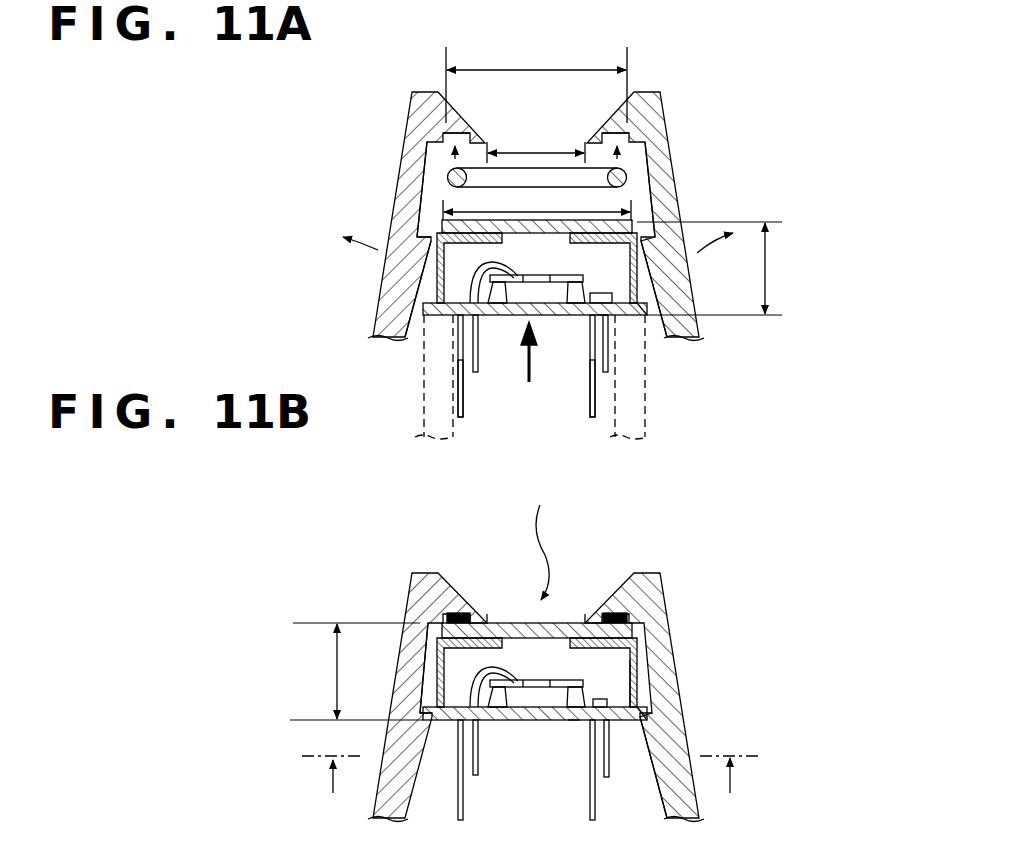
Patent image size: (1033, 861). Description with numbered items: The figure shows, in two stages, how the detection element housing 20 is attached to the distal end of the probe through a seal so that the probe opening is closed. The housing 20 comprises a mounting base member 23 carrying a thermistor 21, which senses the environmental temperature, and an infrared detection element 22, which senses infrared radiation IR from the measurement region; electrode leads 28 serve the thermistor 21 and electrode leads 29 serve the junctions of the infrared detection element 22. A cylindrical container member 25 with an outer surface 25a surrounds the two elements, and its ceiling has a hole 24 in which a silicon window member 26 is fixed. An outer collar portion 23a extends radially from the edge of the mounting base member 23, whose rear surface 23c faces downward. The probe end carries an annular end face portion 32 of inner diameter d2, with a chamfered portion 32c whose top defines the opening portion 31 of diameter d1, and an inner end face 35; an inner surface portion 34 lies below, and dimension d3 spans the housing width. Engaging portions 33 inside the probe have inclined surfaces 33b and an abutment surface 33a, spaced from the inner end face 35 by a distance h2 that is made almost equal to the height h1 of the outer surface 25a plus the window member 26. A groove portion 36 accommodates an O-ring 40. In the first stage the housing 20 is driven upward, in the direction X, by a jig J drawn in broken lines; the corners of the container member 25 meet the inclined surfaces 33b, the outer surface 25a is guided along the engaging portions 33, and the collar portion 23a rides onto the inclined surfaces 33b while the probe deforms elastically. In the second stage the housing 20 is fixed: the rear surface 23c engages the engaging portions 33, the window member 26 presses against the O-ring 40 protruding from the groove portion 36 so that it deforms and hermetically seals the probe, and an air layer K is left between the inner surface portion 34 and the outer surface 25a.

In FIG. 11A, the detection element housing 20 is at (424, 306).
In FIG. 11B, the detection element housing 20 is at (650, 673).
In FIG. 11A, the thermistor 21 is at (601, 293).
In FIG. 11B, the thermistor 21 is at (600, 703).
In FIG. 11A, the infrared detection element 22 is at (545, 282).
In FIG. 11B, the infrared detection element 22 is at (527, 687).
In FIG. 11A, the mounting base member 23 is at (512, 316).
In FIG. 11B, the mounting base member 23 is at (530, 721).
In FIG. 11A, the outer collar portion 23a is at (639, 316).
In FIG. 11B, the outer collar portion 23a is at (646, 718).
In FIG. 11A, the rear surface 23c is at (601, 320).
In FIG. 11B, the rear surface 23c is at (573, 721).
In FIG. 11A, the hole 24 is at (542, 240).
In FIG. 11B, the hole 24 is at (543, 645).
In FIG. 11B, the container member 25 is at (637, 657).
In FIG. 11B, the outer surface 25a is at (636, 690).
In FIG. 11A, the window member 26 is at (517, 247).
In FIG. 11B, the window member 26 is at (520, 628).
In FIG. 11A, the electrode leads 28 is at (606, 374).
In FIG. 11A, the electrode leads 29 is at (477, 373).
In FIG. 11A, the opening portion 31 is at (553, 140).
In FIG. 11B, the opening portion 31 is at (560, 617).
In FIG. 11A, the end face portion 32 is at (643, 112).
In FIG. 11B, the end face portion 32 is at (433, 593).
In FIG. 11A, the chamfered portion 32c is at (470, 137).
In FIG. 11A, the engaging portions 33 is at (662, 243).
In FIG. 11B, the engaging portions 33 is at (653, 733).
In FIG. 11A, the abutment surface 33a is at (423, 232).
In FIG. 11A, the inclined surfaces 33b is at (430, 248).
In FIG. 11A, the inner surface portion 34 is at (648, 165).
In FIG. 11B, the inner surface portion 34 is at (427, 687).
In FIG. 11A, the inner end face 35 is at (438, 142).
In FIG. 11A, the groove portion 36 is at (637, 135).
In FIG. 11A, the O-ring 40 is at (627, 178).
In FIG. 11B, the O-ring 40 is at (630, 618).
In FIG. 11B, the infrared light IR is at (550, 536).
In FIG. 11A, the jig J is at (425, 393).
In FIG. 11B, the air layer K is at (428, 673).
In FIG. 11B, the direction X is at (531, 776).
In FIG. 11A, the dimension d1 is at (536, 143).
In FIG. 11A, the inner diameter d2 is at (536, 83).
In FIG. 11A, the dimension d3 is at (537, 203).
In FIG. 11A, the height h1 is at (716, 268).
In FIG. 11B, the distance h2 is at (356, 671).